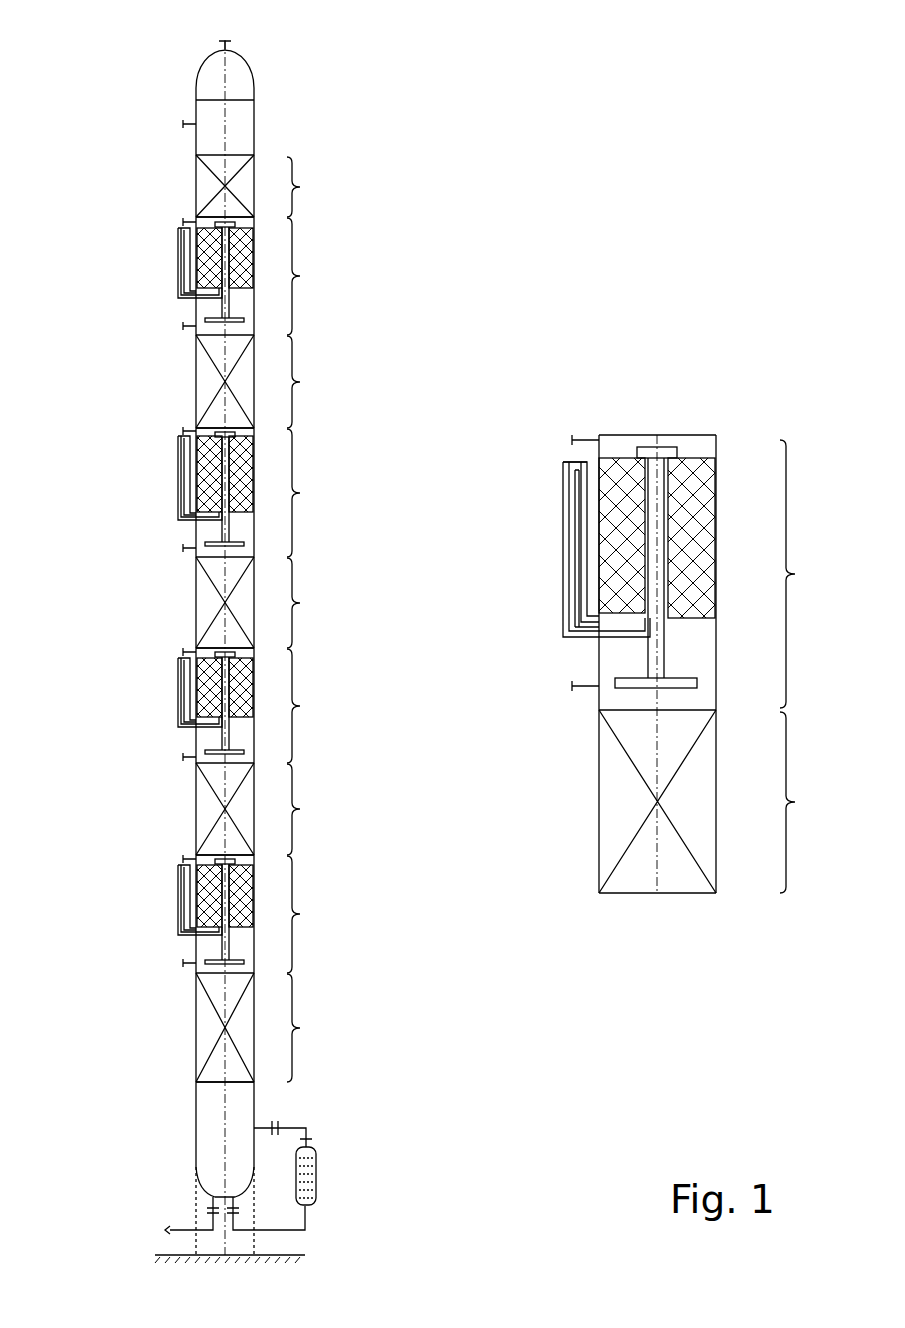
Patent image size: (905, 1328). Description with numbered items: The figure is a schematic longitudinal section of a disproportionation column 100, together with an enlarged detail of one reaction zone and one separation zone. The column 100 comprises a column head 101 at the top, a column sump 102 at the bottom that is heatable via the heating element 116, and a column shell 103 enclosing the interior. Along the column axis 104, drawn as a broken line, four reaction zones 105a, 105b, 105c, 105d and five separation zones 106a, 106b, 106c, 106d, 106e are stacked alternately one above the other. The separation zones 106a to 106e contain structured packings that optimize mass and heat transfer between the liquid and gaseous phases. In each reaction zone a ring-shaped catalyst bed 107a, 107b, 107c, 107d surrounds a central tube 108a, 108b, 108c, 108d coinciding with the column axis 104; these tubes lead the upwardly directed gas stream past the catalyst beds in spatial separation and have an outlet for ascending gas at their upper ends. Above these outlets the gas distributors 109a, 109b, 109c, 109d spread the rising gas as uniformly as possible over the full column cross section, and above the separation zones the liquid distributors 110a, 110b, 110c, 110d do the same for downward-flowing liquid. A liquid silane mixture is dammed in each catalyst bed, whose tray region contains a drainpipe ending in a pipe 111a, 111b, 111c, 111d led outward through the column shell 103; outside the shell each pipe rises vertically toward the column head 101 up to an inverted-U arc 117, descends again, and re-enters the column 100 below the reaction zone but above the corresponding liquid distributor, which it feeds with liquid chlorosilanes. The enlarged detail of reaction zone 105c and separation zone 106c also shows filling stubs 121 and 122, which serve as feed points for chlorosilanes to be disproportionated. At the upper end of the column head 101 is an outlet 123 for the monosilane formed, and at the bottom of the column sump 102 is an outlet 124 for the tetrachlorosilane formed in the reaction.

The column 100 is at (131, 81).
The column head 101 is at (242, 82).
The column sump 102 is at (212, 1142).
The column shell 103 is at (196, 599).
The column axis 104 is at (222, 143).
The reaction zone 105a is at (280, 914).
The reaction zone 105b is at (280, 705).
The reaction zone 105c is at (529, 568).
The reaction zone 105d is at (280, 276).
The separation zone 106a is at (280, 1027).
The separation zone 106b is at (280, 809).
The separation zone 106c is at (528, 725).
The separation zone 106d is at (280, 381).
The separation zone 106e is at (280, 186).
The catalyst bed 107a is at (207, 895).
The catalyst bed 107b is at (207, 688).
The catalyst bed 107c is at (207, 470).
The catalyst bed 107d is at (207, 258).
The central tube 108a is at (222, 920).
The central tube 108b is at (222, 712).
The central tube 108c is at (222, 493).
The central tube 108d is at (222, 283).
The gas distributor 109a is at (218, 859).
The gas distributor 109b is at (218, 652).
The gas distributor 109c is at (218, 432).
The gas distributor 109d is at (218, 221).
The liquid distributor 110a is at (212, 962).
The liquid distributor 110b is at (212, 752).
The liquid distributor 110c is at (212, 544).
The liquid distributor 110d is at (212, 320).
The pipe 111a is at (180, 875).
The pipe 111b is at (180, 667).
The pipe 111c is at (180, 447).
The pipe 111d is at (180, 240).
The heating element 116 is at (318, 1178).
The arc 117 is at (563, 462).
The filling stub 121 is at (573, 682).
The filling stub 122 is at (573, 436).
The outlet 123 is at (223, 40).
The outlet 124 is at (178, 1229).